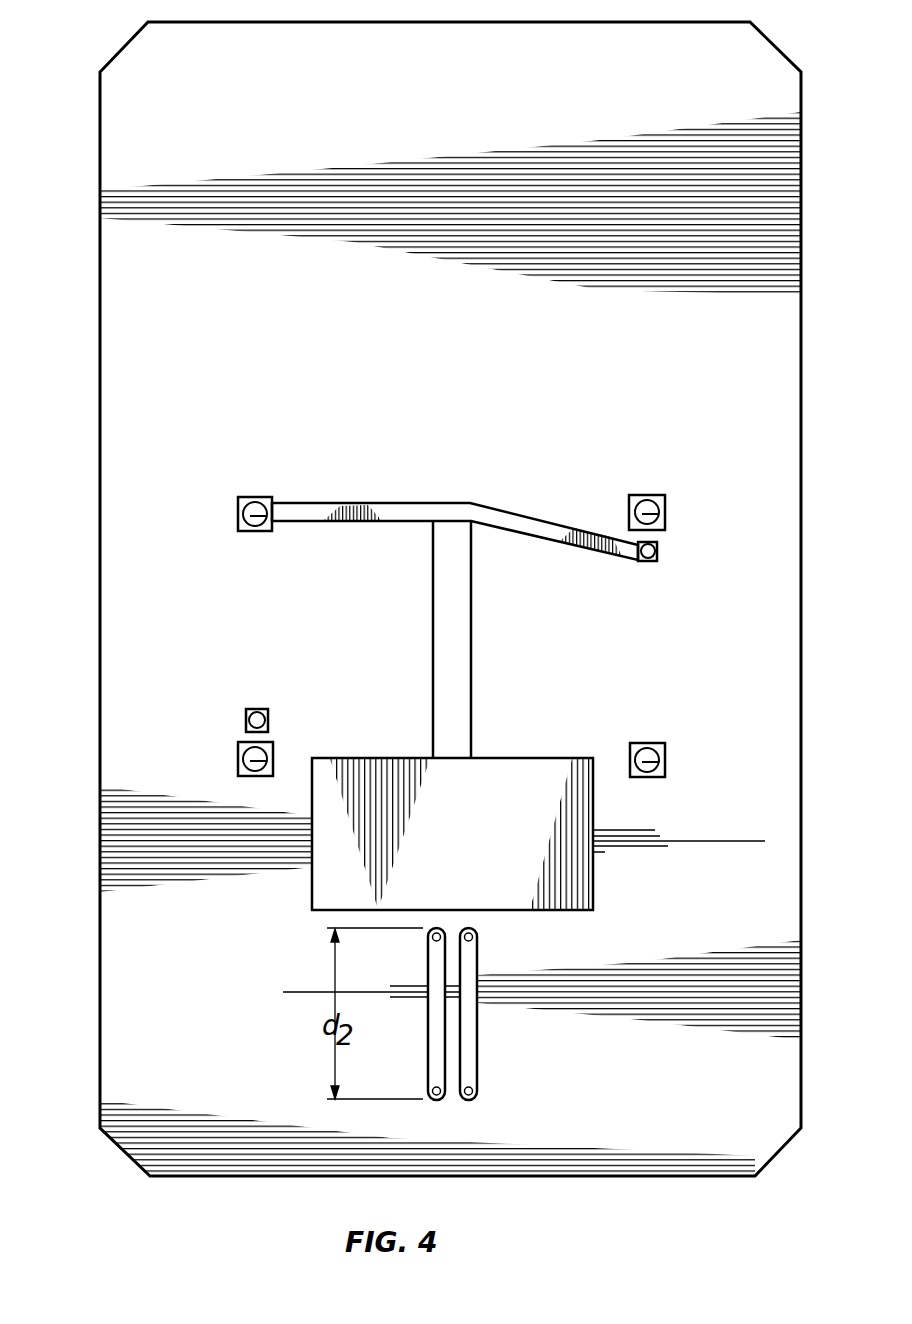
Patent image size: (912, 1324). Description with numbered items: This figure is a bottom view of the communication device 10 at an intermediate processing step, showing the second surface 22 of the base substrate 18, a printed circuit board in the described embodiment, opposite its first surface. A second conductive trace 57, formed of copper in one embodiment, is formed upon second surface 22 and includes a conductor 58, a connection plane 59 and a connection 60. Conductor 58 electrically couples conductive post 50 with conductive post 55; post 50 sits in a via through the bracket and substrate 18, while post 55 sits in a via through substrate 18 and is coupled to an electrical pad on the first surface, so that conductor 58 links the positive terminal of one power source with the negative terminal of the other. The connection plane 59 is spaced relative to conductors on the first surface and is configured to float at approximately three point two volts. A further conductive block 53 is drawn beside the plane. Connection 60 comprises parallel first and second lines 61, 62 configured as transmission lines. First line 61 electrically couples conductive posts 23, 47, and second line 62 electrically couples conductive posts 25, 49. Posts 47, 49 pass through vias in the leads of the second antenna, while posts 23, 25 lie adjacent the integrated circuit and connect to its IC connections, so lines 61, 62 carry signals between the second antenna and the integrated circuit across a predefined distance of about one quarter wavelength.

The communication device 10 is at (63, 100).
The base substrate 18 is at (740, 885).
The second surface 22 is at (468, 350).
The second conductive trace 57 is at (423, 555).
The conductor 58 is at (402, 515).
The connection plane 59 is at (430, 630).
The conductive post 50 is at (255, 497).
The conductive post 55 is at (657, 561).
The fastener block 53 is at (643, 742).
The connection 60 is at (479, 1036).
The first line 61 is at (432, 1036).
The second line 62 is at (514, 1020).
The conductive post 23 is at (433, 936).
The conductive post 25 is at (478, 930).
The conductive post 47 is at (438, 1102).
The conductive post 49 is at (478, 1088).